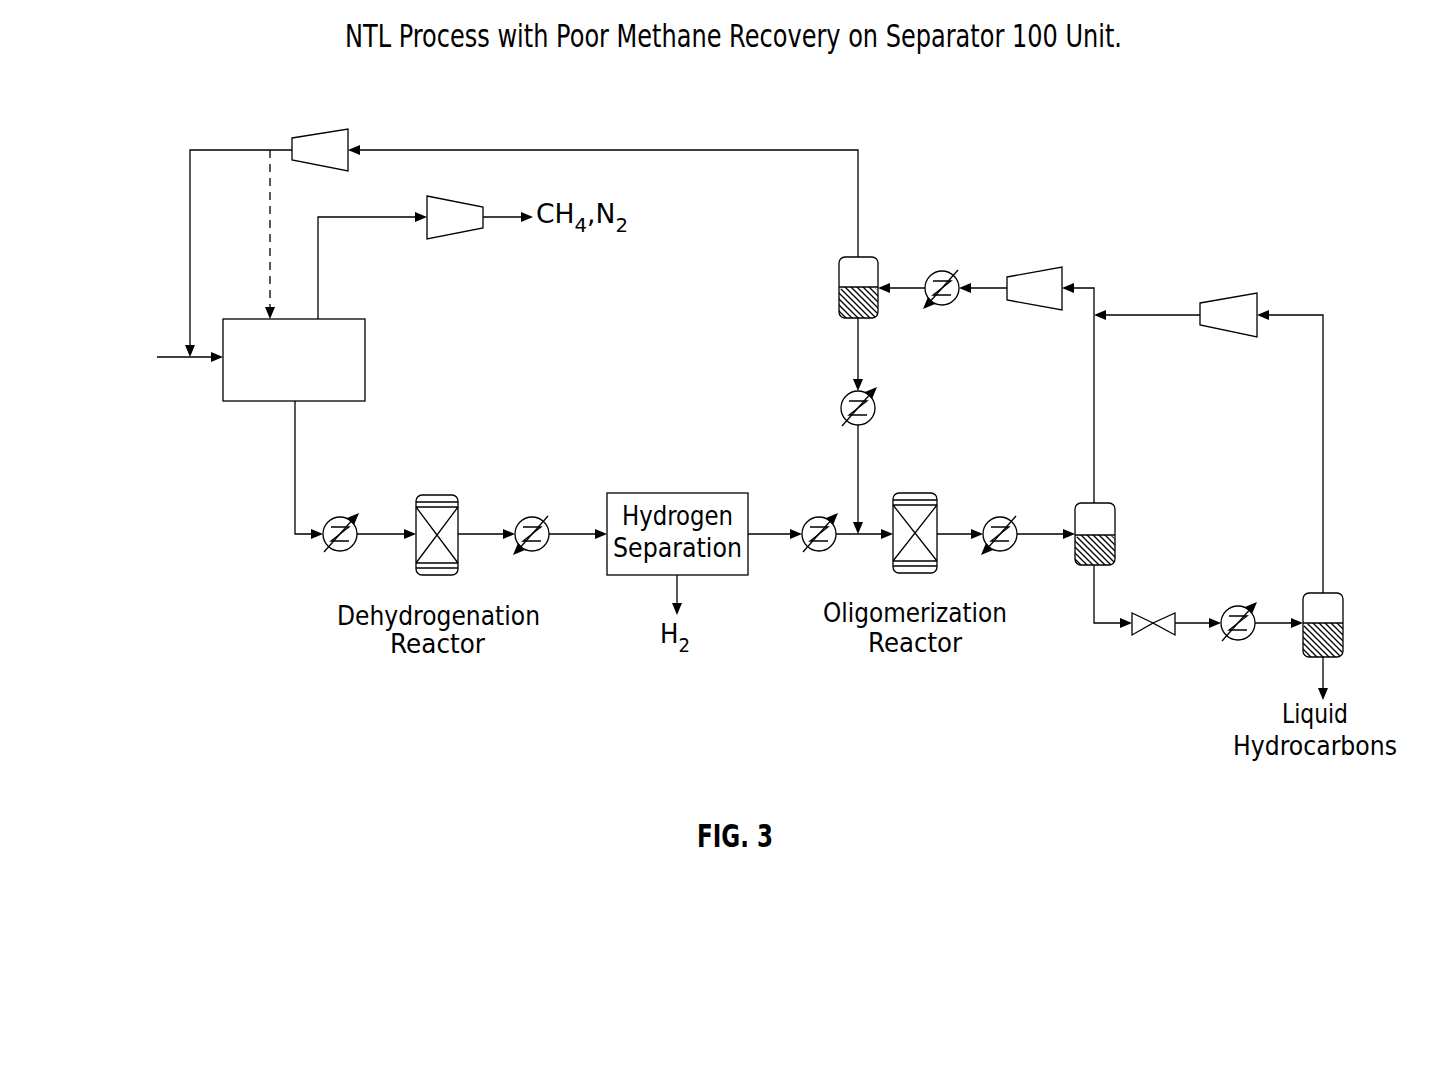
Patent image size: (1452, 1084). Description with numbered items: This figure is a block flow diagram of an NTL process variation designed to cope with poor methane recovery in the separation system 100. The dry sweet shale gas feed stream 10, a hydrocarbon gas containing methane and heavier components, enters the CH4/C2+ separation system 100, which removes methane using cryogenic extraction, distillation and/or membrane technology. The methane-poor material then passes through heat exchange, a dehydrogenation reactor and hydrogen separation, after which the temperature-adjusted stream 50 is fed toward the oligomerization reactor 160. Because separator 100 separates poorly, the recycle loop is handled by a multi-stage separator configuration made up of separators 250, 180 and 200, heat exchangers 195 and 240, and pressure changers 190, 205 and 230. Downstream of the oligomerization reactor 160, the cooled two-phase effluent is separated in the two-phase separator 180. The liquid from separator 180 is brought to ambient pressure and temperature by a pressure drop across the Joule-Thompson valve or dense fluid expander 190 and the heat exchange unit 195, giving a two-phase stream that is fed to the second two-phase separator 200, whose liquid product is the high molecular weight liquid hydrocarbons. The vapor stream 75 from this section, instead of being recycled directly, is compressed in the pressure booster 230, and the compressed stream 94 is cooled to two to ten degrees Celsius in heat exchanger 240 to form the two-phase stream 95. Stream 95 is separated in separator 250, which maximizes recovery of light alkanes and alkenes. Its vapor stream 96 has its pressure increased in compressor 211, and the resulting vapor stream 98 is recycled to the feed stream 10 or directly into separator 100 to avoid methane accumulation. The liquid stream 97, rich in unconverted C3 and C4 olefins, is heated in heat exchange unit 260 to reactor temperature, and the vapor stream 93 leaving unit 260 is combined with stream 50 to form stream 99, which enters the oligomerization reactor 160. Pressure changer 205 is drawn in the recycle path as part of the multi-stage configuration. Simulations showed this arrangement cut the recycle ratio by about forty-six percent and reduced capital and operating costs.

The feed stream 10 is at (185, 360).
The separation system 100 is at (250, 402).
The vapor stream 98 is at (268, 228).
The compressor 211 is at (350, 133).
The vapor stream 96 is at (765, 148).
The separator 250 is at (851, 255).
The liquid stream 97 is at (856, 348).
The two-phase stream 95 is at (901, 287).
The heat exchanger 240 is at (946, 271).
The compressed vapor stream 94 is at (982, 290).
The pressure booster 230 is at (1036, 268).
The vapor stream 75 is at (1098, 300).
The pressure changer 205 is at (1258, 300).
The heat exchange unit 260 is at (842, 408).
The vapor stream 93 is at (856, 480).
The stream 50 is at (843, 540).
The stream 99 is at (868, 540).
The oligomerization reactor 160 is at (915, 493).
The two-phase separator 180 is at (1117, 516).
The dense fluid expander 190 is at (1135, 633).
The heat exchange unit 195 is at (1235, 643).
The two-phase separator 200 is at (1345, 610).